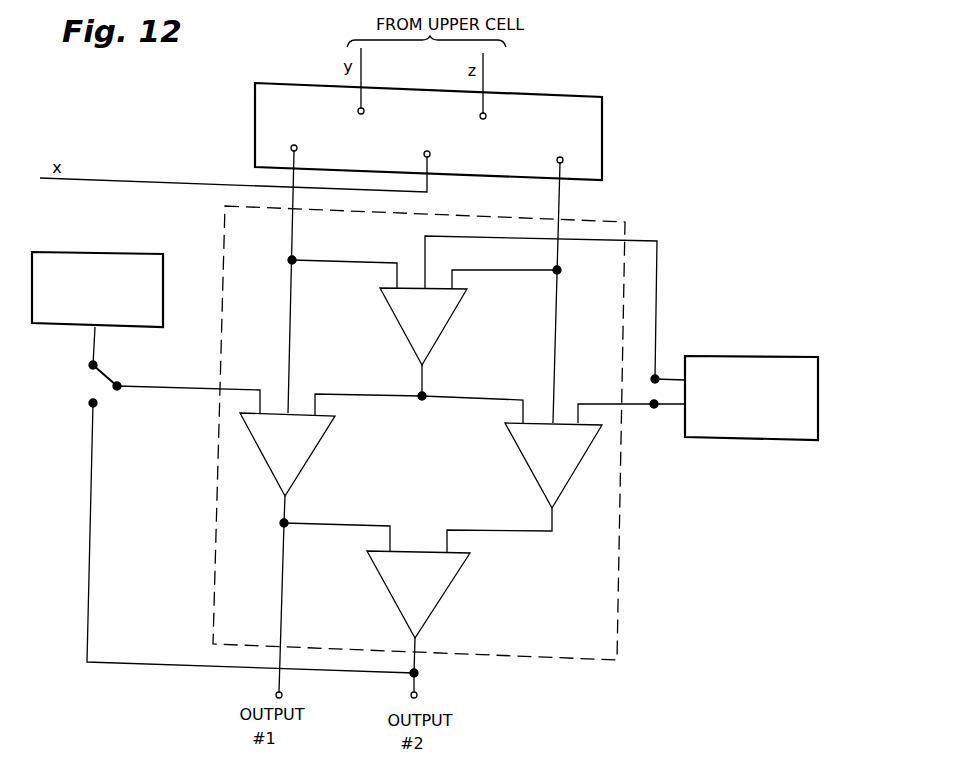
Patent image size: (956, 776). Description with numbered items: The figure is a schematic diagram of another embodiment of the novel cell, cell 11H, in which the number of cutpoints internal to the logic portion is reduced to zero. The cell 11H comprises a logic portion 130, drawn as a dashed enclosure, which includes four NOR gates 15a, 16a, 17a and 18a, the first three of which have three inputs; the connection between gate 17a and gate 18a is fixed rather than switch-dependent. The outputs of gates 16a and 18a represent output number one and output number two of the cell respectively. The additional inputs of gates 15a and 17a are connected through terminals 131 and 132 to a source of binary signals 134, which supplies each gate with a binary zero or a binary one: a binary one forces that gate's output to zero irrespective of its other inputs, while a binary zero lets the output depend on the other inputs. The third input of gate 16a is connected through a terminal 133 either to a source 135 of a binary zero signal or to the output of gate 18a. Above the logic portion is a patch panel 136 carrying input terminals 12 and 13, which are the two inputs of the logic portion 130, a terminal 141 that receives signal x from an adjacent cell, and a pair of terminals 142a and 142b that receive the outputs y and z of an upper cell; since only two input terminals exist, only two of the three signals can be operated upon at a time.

The patch panel 136 is at (569, 96).
The terminal 142a is at (387, 81).
The terminal 142b is at (510, 86).
The input terminal 12 is at (283, 266).
The terminal 141 is at (429, 151).
The input terminal 13 is at (571, 279).
The logic portion 130 is at (611, 217).
The cell 11H is at (703, 243).
The NOR gate 15a is at (455, 325).
The NOR gate 16a is at (320, 445).
The NOR gate 17a is at (522, 455).
The NOR gate 18a is at (448, 584).
The source of binary 0 signal 135 is at (120, 252).
The terminal 133 is at (106, 375).
The source of binary signals 134 is at (775, 358).
The terminal 131 is at (657, 376).
The terminal 132 is at (653, 410).